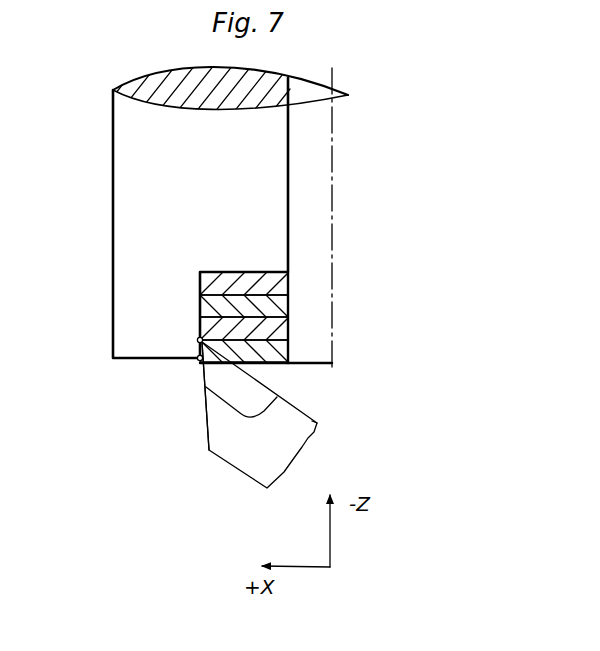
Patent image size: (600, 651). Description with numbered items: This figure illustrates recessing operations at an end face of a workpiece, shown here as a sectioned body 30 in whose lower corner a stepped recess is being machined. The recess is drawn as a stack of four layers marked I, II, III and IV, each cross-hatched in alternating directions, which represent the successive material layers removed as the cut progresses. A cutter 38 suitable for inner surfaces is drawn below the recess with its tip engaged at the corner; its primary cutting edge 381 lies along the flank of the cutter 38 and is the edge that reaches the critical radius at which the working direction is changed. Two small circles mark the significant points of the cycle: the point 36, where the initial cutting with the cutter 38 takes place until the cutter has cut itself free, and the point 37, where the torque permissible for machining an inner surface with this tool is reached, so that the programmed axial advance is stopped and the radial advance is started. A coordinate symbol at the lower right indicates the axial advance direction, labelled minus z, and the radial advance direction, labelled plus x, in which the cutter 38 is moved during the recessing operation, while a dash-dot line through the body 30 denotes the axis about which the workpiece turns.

The workpiece / tool body 30 is at (128, 215).
The point 36 is at (198, 360).
The point 37 is at (197, 339).
The cutter 38 is at (312, 420).
The primary cutting edge 381 is at (206, 410).
The first layer I is at (284, 350).
The second layer II is at (283, 330).
The third layer III is at (283, 306).
The fourth layer IV is at (283, 284).